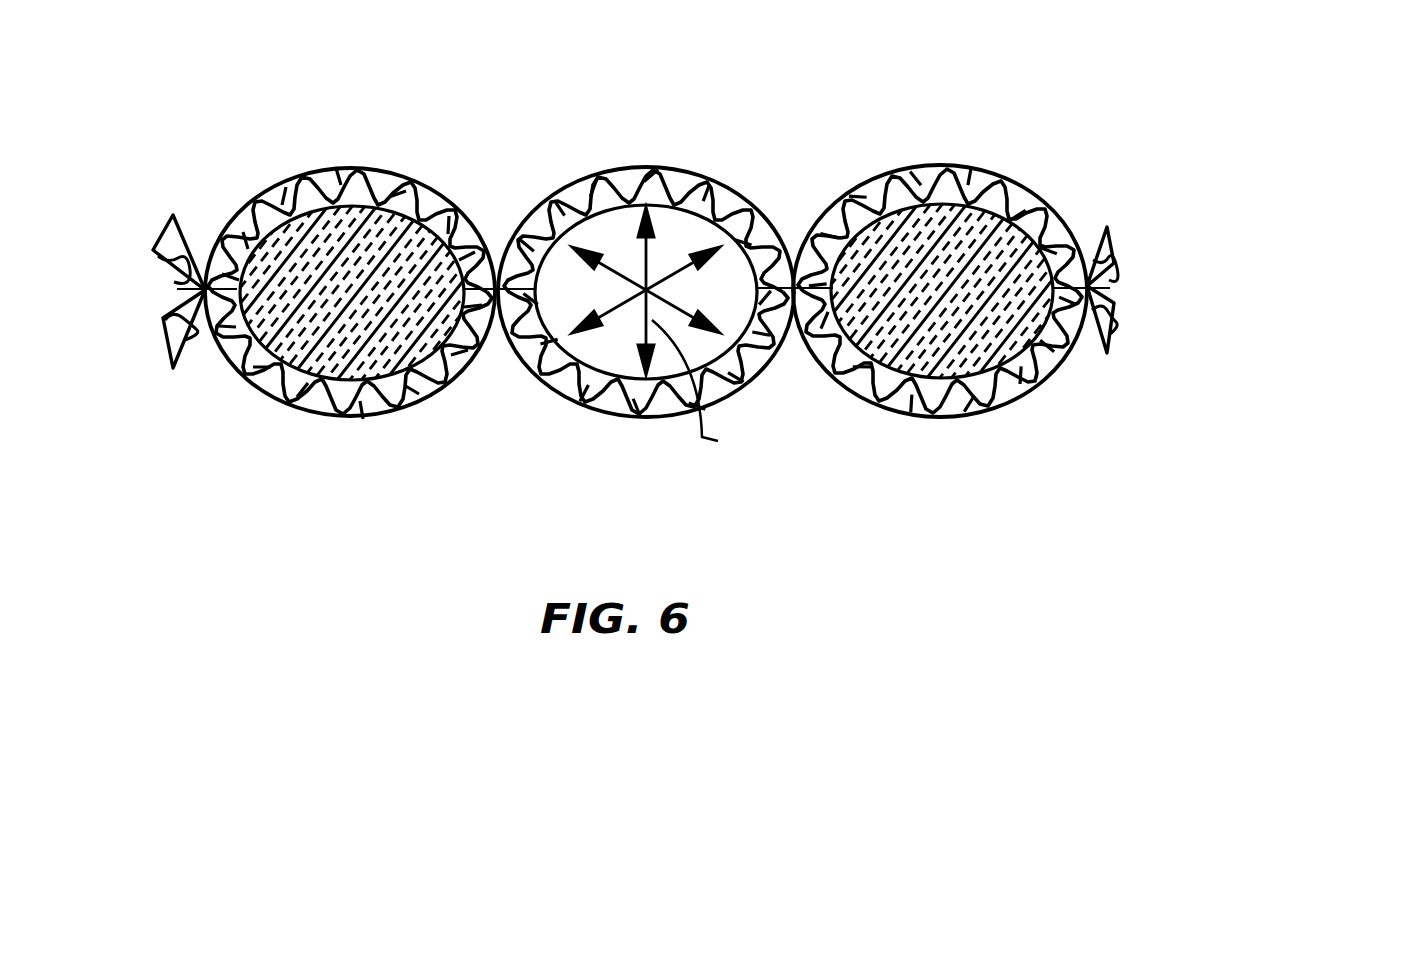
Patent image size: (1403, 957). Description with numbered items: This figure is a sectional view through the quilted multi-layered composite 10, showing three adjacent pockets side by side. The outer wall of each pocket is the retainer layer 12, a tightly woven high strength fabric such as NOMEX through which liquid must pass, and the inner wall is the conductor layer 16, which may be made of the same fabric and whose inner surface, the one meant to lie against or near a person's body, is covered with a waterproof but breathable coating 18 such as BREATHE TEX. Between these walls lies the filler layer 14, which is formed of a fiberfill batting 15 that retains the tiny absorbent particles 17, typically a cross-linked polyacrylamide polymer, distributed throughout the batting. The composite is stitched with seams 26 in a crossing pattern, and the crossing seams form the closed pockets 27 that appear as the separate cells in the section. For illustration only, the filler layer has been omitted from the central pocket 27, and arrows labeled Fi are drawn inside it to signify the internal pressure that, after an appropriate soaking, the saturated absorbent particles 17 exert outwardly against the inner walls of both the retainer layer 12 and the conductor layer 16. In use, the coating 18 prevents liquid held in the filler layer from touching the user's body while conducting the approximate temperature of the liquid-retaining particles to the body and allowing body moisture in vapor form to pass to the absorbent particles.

The multi-layered composite 10 is at (831, 119).
The retainer layer 12 is at (405, 157).
The filler layer 14 is at (965, 237).
The fiberfill batting 15 is at (830, 380).
The conductor layer 16 is at (358, 434).
The absorbent particles 17 is at (909, 347).
The waterproof but breathable coating 18 is at (221, 392).
The seams 26 is at (797, 290).
The closed pockets 27 is at (613, 170).